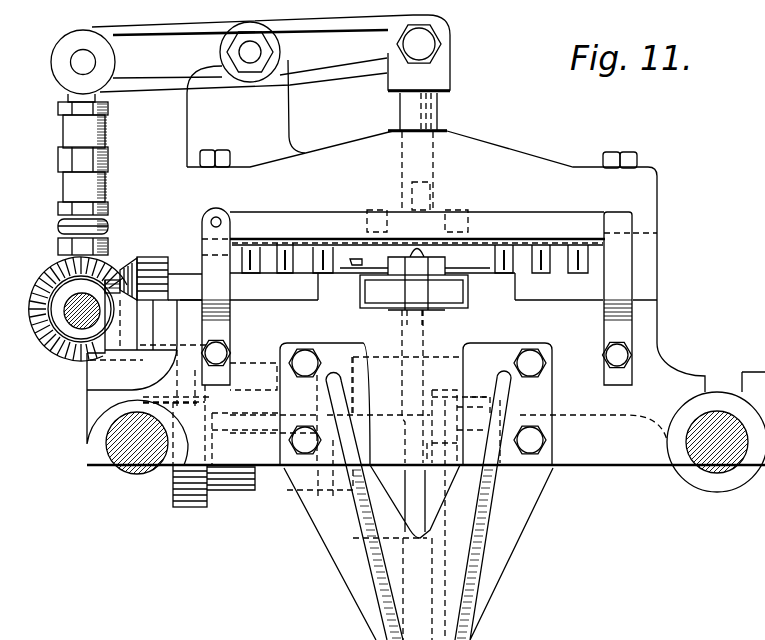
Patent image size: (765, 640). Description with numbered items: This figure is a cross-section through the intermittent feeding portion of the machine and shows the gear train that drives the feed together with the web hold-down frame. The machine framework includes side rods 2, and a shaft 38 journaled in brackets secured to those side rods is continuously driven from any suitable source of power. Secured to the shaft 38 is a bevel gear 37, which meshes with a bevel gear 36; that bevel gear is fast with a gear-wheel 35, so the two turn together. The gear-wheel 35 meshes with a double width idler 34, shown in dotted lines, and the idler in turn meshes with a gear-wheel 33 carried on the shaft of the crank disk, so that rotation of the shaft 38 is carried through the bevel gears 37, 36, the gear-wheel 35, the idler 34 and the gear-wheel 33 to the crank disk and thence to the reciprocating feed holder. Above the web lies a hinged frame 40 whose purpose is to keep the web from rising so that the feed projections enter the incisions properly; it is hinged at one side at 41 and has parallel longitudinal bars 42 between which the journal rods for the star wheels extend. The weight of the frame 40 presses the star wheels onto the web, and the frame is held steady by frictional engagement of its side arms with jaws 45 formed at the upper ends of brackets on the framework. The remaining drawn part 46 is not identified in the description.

The side rod 2 is at (140, 473).
The gear-wheel 33 is at (188, 502).
The double width idler 34 is at (87, 418).
The gear-wheel 35 is at (152, 256).
The bevel gear 36 is at (132, 266).
The bevel gear 37 is at (44, 276).
The shaft 38 is at (77, 333).
The hinged frame 40 is at (290, 214).
The hinge 41 is at (218, 212).
The longitudinal bar 42 is at (375, 222).
The jaw 45 is at (621, 223).
The bar 46 is at (553, 242).